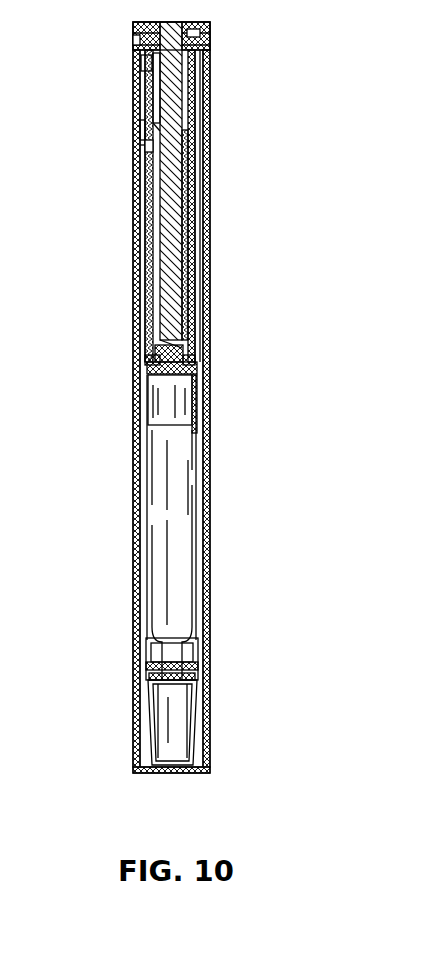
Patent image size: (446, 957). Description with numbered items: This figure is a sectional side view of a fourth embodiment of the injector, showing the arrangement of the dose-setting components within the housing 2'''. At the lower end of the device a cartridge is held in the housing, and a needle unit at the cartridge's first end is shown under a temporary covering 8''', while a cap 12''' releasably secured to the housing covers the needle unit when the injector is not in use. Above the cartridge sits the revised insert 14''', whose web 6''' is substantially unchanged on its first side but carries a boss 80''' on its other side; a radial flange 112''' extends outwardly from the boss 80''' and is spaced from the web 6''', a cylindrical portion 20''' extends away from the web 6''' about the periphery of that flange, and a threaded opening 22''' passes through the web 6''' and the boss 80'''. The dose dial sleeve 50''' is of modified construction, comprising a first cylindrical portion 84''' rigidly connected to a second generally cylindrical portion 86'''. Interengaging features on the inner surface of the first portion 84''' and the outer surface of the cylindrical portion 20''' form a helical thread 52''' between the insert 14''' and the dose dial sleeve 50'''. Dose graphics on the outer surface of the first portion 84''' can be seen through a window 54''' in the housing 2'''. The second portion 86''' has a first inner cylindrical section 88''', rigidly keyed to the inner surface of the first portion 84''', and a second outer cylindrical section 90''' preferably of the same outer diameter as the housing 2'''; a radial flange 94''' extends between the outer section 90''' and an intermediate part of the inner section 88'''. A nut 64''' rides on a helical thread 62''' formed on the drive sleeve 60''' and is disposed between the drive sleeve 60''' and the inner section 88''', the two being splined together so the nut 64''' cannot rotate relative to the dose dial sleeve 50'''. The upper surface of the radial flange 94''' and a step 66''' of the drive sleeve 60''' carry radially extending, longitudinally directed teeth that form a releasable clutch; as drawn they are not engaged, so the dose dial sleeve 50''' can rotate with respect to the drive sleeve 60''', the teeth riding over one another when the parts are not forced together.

The housing 2''' is at (131, 397).
The web 6''' is at (234, 367).
The temporary covering 8''' is at (140, 722).
The cap 12''' is at (224, 684).
The insert 14''' is at (259, 408).
The cylindrical portion 20''' is at (234, 494).
The threaded opening 22''' is at (99, 206).
The dose dial sleeve 50''' is at (255, 206).
The helical thread 52''' is at (258, 206).
The window 54''' is at (92, 130).
The drive sleeve 60''' is at (106, 92).
The helical thread 62''' is at (238, 181).
The nut 64''' is at (249, 235).
The step 66''' is at (223, 30).
The boss 80''' is at (121, 374).
The first cylindrical portion 84''' is at (103, 206).
The second generally cylindrical portion 86''' is at (101, 29).
The first inner cylindrical section 88''' is at (102, 155).
The second outer cylindrical section 90''' is at (102, 67).
The radial flange 94''' is at (251, 48).
The radial flange 112''' is at (242, 356).